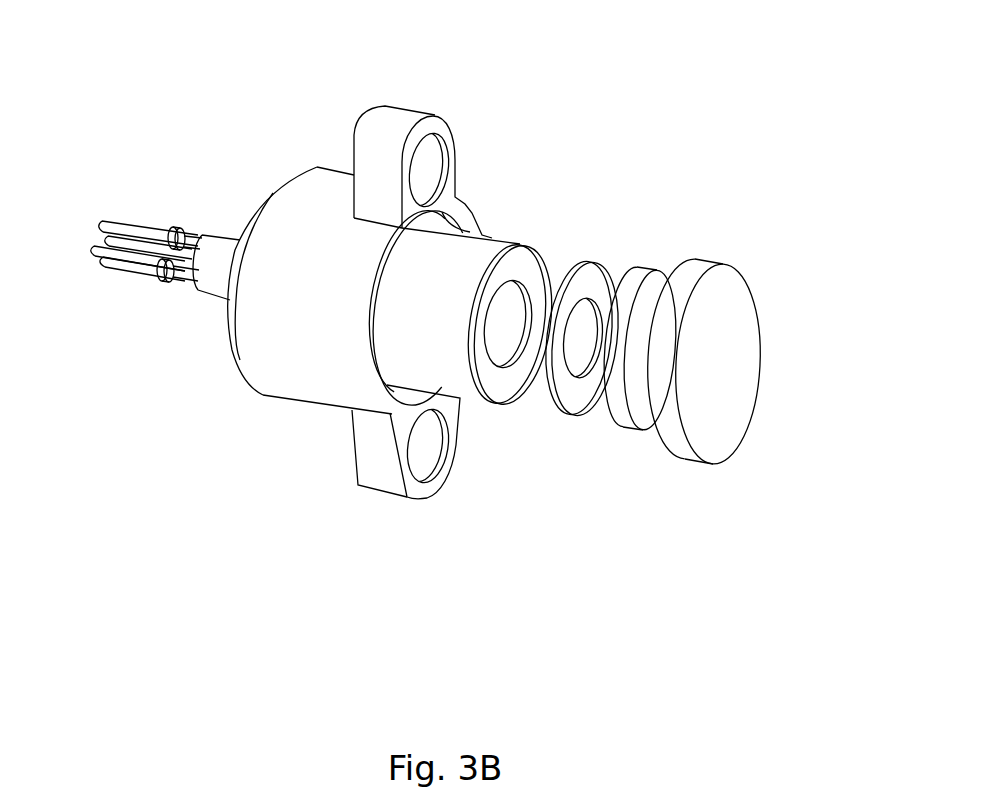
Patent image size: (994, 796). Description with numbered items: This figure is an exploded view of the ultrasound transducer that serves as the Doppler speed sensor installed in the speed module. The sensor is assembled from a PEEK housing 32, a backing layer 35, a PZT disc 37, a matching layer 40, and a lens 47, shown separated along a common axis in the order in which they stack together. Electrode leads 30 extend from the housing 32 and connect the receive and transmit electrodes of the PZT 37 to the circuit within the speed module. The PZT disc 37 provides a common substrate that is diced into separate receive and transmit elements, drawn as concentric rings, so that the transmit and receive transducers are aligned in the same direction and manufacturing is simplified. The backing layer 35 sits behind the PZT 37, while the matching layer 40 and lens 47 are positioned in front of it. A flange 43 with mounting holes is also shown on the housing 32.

The electrode leads 30 is at (113, 295).
The PEEK housing 32 is at (318, 318).
The backing layer 35 is at (517, 256).
The PZT disc 37 is at (580, 335).
The matching layer 40 is at (632, 347).
The mounting bracket / flange 43 is at (348, 114).
The lens 47 is at (728, 362).